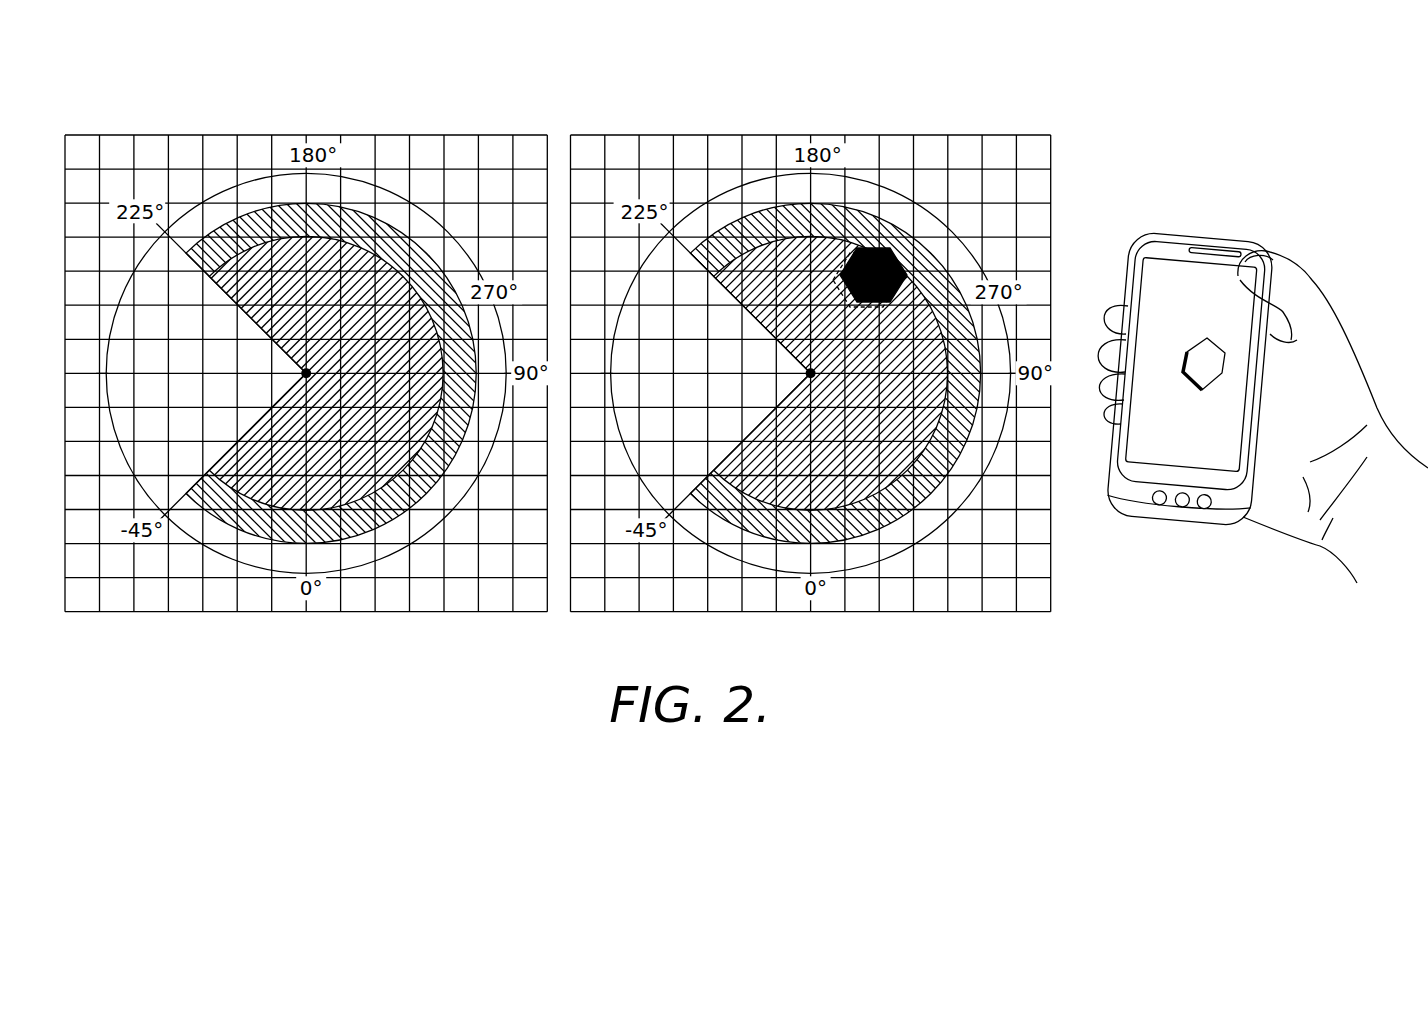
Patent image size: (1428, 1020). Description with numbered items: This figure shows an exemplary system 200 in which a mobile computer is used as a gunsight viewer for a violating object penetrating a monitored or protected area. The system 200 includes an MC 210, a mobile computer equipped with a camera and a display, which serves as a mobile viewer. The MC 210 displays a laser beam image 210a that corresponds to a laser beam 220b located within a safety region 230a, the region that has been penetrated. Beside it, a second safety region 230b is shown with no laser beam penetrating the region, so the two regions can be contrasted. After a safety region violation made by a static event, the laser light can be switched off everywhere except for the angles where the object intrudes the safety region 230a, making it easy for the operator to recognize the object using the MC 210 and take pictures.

The system 200 is at (1168, 87).
The MC 210 is at (1208, 234).
The icon displayed on mobile device 210a is at (1218, 343).
The laser beam 220b is at (903, 262).
The safety region 230a is at (833, 203).
The safety region 230b is at (358, 212).